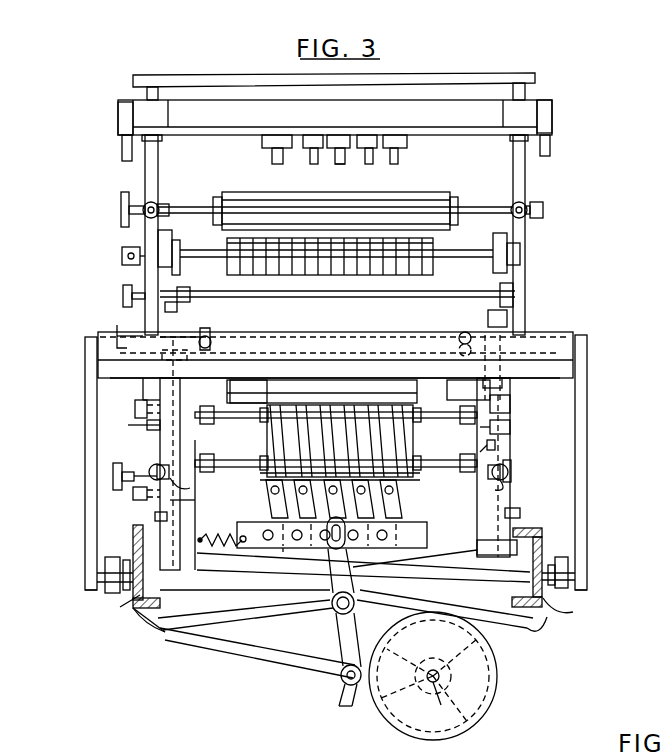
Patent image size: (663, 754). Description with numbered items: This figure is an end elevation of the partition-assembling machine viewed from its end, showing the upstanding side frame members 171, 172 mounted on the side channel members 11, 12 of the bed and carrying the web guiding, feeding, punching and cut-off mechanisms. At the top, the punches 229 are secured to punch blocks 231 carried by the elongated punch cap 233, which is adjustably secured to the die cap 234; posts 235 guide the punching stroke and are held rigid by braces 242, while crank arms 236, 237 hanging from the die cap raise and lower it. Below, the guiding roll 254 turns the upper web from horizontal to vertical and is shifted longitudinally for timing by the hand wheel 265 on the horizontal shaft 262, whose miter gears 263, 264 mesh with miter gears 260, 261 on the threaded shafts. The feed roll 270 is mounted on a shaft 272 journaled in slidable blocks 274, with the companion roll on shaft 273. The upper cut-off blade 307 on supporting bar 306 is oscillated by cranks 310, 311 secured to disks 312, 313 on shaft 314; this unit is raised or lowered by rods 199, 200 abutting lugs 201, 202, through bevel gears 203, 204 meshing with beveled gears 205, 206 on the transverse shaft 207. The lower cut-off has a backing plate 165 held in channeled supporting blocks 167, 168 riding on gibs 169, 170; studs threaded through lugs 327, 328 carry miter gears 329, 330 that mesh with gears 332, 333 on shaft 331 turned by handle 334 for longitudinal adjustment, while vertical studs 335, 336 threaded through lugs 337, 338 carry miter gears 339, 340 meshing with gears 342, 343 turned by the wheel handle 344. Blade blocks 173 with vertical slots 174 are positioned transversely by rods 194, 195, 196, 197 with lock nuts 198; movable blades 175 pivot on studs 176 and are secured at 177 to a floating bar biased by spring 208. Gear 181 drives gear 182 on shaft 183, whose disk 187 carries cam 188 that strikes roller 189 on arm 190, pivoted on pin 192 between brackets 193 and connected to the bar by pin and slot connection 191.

The braces 242 is at (450, 75).
The die cap 234 is at (480, 105).
The punch cap 233 is at (215, 130).
The posts 235 is at (160, 162).
The crank arm 237 is at (122, 148).
The crank arm 236 is at (551, 140).
The punch blocks 231 is at (407, 146).
The punches 229 is at (358, 172).
The miter gear 260 is at (148, 187).
The side frame member 171 is at (525, 300).
The miter gear 263 is at (160, 205).
The miter gear 264 is at (527, 214).
The hand wheel 265 is at (121, 209).
The horizontal shaft 262 is at (258, 205).
The miter gear 261 is at (511, 207).
The guiding roll 254 is at (336, 200).
The feed roll 270 is at (415, 273).
The blocks 274 is at (196, 258).
The shaft 272 is at (455, 256).
The shaft 273 is at (122, 253).
The side frame member 172 is at (123, 292).
The transverse shaft 207 is at (283, 290).
The beveled gear 206 is at (185, 290).
The bevel gear 204 is at (178, 307).
The beveled gear 205 is at (513, 290).
The bevel gear 203 is at (530, 318).
The supporting bar 306 is at (376, 345).
The blade 307 is at (398, 379).
The wheel type handle 344 is at (336, 335).
The miter gear 339 is at (455, 342).
The miter gear 343 is at (210, 335).
The miter gear 340 is at (211, 344).
The miter gear 342 is at (465, 332).
The lug 337 is at (520, 350).
The vertically extending stud 335 is at (180, 362).
The vertically extending stud 336 is at (483, 381).
The spring 208 is at (115, 330).
The crank 311 is at (90, 401).
The crank 310 is at (587, 406).
The lug 338 is at (160, 397).
The rod 200 is at (160, 426).
The lug 202 is at (160, 433).
The rod 199 is at (500, 410).
The lug 201 is at (505, 430).
The rod 196 is at (252, 386).
The lock nuts 198 is at (468, 391).
The blade blocks 173 is at (252, 391).
The movable blades 175 is at (338, 411).
The vertical slots 174 is at (385, 409).
The rod 194 is at (420, 399).
The rod 197 is at (270, 421).
The rod 195 is at (437, 461).
The transversely extending shaft 331 is at (240, 479).
The studs 176 is at (394, 491).
The pivot connection 177 is at (388, 535).
The pin and slot connection 191 is at (346, 542).
The pin 192 is at (333, 605).
The roller 189 is at (343, 681).
The gear 181 is at (343, 706).
The cam 188 is at (380, 726).
The disk 187 is at (497, 690).
The gear 182 is at (494, 677).
The shaft 183 is at (449, 697).
The lug 328 is at (155, 468).
The handle 334 is at (113, 475).
The miter gear 330 is at (160, 505).
The miter gear 333 is at (178, 492).
The gib 170 is at (155, 518).
The channeled supporting block 168 is at (137, 612).
The disk 313 is at (110, 593).
The miter gear 332 is at (497, 449).
The lug 327 is at (508, 468).
The miter gear 329 is at (511, 478).
The gib 169 is at (520, 513).
The channeled supporting block 167 is at (540, 551).
The disk 312 is at (568, 571).
The backing plate 165 is at (448, 530).
The shaft 314 is at (456, 580).
The bracket 193 is at (235, 612).
The arm 190 is at (300, 655).
The side channel member 12 is at (575, 609).
The side channel member 11 is at (152, 616).